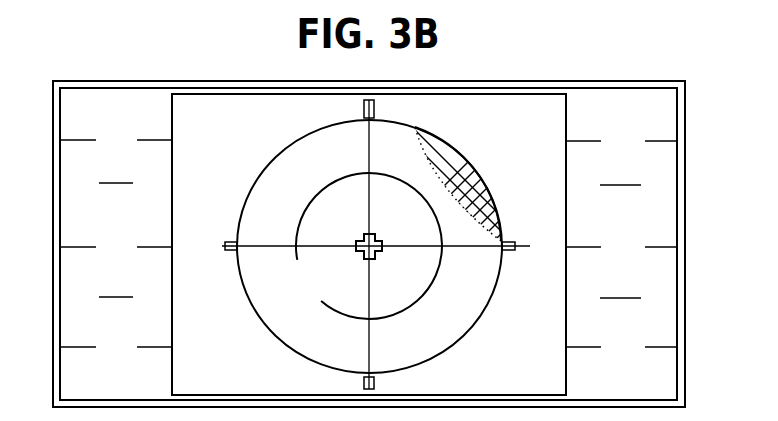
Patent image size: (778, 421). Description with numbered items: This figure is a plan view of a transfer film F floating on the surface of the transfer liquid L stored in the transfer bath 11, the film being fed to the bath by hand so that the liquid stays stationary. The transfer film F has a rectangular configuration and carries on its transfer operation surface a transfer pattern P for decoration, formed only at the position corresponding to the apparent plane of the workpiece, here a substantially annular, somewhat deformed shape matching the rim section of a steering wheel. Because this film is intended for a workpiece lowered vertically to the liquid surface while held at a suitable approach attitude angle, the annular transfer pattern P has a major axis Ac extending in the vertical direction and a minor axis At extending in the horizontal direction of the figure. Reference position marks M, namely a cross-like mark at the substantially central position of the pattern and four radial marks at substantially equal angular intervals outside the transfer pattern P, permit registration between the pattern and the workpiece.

The transfer bath 11 is at (601, 83).
The transfer film F is at (532, 359).
The transfer liquid L is at (630, 231).
The minor axis At is at (365, 213).
The major axis Ac is at (329, 244).
The transfer pattern P is at (476, 182).
The reference position marks M is at (512, 242).